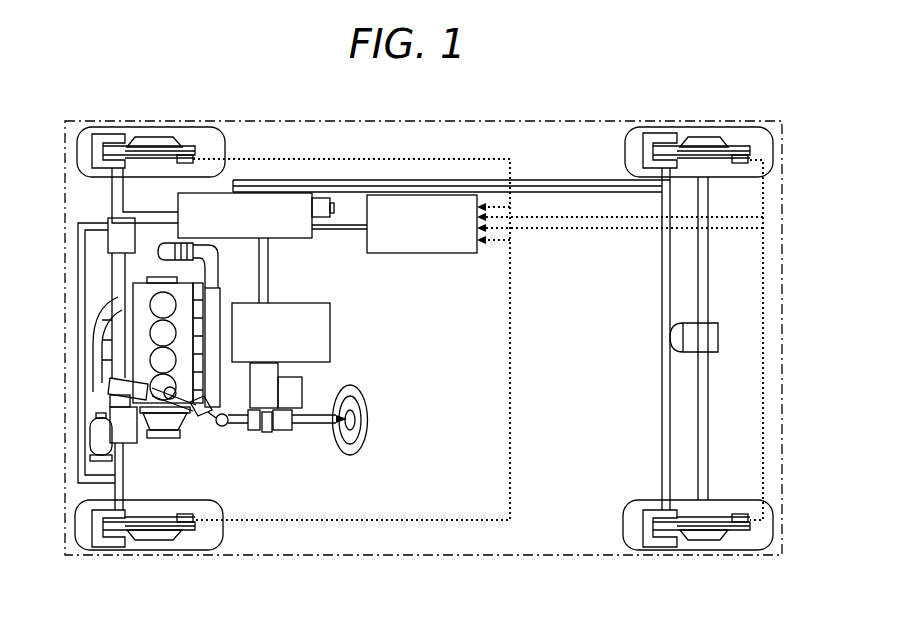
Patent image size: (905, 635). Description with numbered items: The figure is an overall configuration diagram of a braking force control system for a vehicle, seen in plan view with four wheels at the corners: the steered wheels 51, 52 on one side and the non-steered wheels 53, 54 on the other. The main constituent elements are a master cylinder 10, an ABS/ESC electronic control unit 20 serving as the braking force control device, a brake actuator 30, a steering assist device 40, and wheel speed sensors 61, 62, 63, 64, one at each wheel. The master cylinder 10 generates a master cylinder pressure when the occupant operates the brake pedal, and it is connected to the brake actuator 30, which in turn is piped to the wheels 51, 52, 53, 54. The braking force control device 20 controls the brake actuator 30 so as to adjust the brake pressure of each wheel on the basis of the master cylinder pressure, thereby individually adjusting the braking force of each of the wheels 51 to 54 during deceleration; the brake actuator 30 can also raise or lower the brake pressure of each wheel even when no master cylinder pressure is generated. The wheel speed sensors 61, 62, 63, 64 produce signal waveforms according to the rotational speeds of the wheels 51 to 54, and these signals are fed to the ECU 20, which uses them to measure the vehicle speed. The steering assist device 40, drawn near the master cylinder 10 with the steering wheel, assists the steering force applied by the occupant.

The master cylinder 10 is at (325, 333).
The ABS/ESC electronic control unit 20 is at (443, 195).
The brake actuator 30 is at (298, 195).
The steering assist device 40 is at (288, 433).
The steered wheel 51 is at (85, 142).
The steered wheel 52 is at (85, 537).
The non-steered wheel 53 is at (635, 142).
The non-steered wheel 54 is at (635, 537).
The wheel speed sensor 61 is at (195, 152).
The wheel speed sensor 62 is at (193, 530).
The wheel speed sensor 63 is at (748, 150).
The wheel speed sensor 64 is at (743, 528).